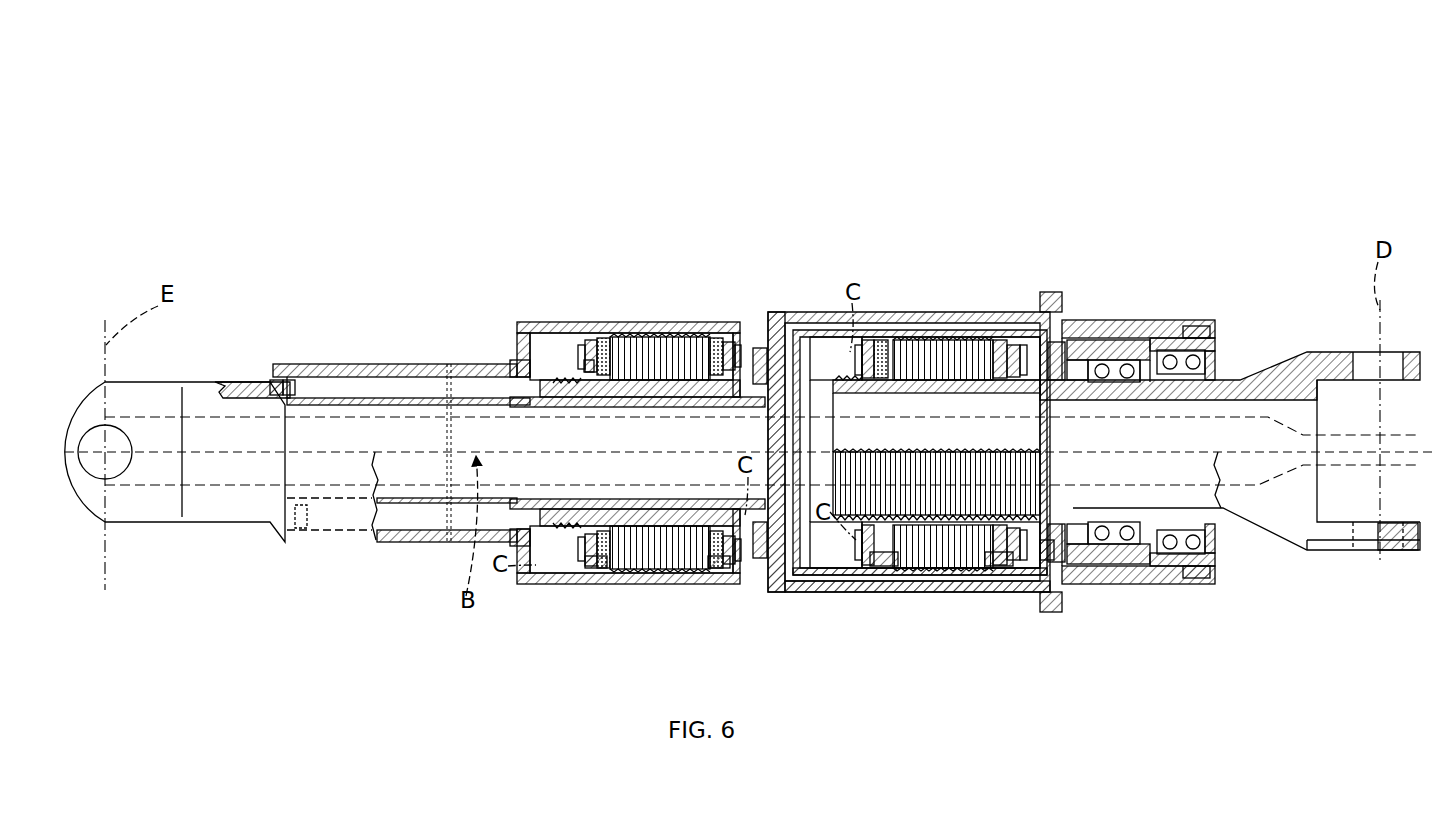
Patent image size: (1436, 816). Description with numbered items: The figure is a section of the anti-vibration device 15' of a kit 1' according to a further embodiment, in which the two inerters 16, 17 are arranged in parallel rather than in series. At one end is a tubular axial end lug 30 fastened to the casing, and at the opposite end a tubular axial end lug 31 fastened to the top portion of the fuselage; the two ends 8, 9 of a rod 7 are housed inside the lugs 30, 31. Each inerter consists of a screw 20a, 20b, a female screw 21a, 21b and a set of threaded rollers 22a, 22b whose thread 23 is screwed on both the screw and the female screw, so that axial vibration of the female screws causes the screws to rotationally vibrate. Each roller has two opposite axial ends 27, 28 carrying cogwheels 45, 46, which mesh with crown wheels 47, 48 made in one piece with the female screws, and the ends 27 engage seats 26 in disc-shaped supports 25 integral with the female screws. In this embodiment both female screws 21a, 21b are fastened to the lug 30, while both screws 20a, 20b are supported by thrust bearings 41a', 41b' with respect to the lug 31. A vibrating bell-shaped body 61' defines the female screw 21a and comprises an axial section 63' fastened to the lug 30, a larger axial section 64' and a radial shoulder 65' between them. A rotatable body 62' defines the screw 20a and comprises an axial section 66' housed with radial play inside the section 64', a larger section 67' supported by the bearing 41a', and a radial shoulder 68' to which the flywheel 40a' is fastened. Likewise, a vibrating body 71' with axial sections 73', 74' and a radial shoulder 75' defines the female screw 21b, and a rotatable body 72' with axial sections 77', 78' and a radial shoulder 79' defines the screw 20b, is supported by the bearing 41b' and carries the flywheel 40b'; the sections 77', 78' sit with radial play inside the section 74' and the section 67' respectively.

The kit 1' is at (750, 255).
The rod 7 is at (96, 470).
The end 8 is at (126, 476).
The end 9 is at (1388, 468).
The device 15' is at (1005, 333).
The inerter 16 is at (603, 286).
The inerter 17 is at (940, 274).
The screw 20a is at (557, 366).
The screw 20b is at (846, 392).
The female screw 21a is at (705, 362).
The female screw 21b is at (926, 376).
The threaded rollers 22a is at (646, 338).
The threaded rollers 22b is at (943, 366).
The thread 23 is at (960, 345).
The disc-shaped supports 25 is at (592, 576).
The seats 26 is at (1009, 336).
The axial end 27 is at (592, 368).
The axial end 28 is at (727, 368).
The tubular axial end lug 30 is at (200, 392).
The tubular axial end lug 31 is at (1325, 356).
The flywheel 40a' is at (980, 492).
The flywheel 40b' is at (1138, 485).
The thrust bearing 41a' is at (1159, 320).
The thrust bearing 41b' is at (1154, 572).
The cogwheel 45 is at (905, 350).
The cogwheel 46 is at (716, 535).
The crown wheel 47 is at (890, 345).
The crown wheel 48 is at (722, 345).
The body 61' is at (408, 340).
The body 62' is at (812, 452).
The axial section 63' is at (395, 331).
The axial section 64' is at (628, 567).
The radial shoulder 65' is at (616, 328).
The axial section 66' is at (453, 502).
The section 67' is at (909, 398).
The radial shoulder 68' is at (791, 412).
The body 71' is at (382, 319).
The body 72' is at (1045, 434).
The axial section 73' is at (447, 568).
The axial section 74' is at (917, 618).
The radial shoulder 75' is at (918, 595).
The axial section 77' is at (936, 419).
The axial section 78' is at (1111, 400).
The radial shoulder 79' is at (1078, 400).